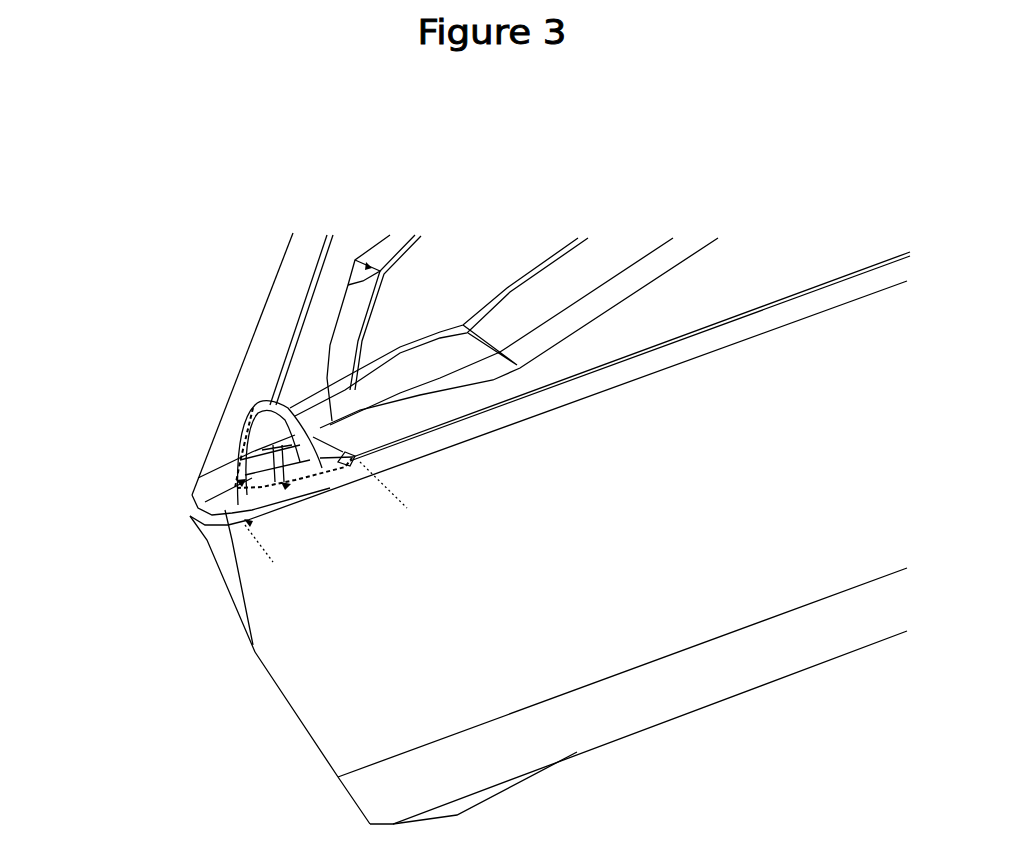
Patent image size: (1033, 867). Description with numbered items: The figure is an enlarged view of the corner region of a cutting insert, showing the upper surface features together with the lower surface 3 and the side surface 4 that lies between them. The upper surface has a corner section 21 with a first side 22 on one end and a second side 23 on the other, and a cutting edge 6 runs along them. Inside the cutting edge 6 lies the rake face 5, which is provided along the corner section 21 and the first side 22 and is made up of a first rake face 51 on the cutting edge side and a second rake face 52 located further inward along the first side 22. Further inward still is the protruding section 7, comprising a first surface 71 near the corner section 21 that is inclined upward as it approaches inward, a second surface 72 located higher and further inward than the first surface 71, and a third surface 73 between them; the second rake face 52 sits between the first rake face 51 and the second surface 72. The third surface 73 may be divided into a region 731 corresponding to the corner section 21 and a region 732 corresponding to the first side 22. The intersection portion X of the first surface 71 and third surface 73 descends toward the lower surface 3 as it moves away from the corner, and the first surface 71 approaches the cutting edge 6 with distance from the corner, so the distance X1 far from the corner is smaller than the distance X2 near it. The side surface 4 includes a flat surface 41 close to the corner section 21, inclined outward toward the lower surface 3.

The lower surface 3 is at (628, 733).
The side surface 4 is at (317, 680).
The flat surface 41 is at (232, 590).
The corner section 21 is at (205, 530).
The first side 22 is at (507, 430).
The second side 23 is at (200, 487).
The rake face 5 is at (428, 157).
The first rake face 51 is at (473, 430).
The second rake face 52 is at (425, 420).
The cutting edge 6 is at (284, 503).
The protruding section 7 is at (257, 185).
The first surface 71 is at (207, 493).
The second surface 72 is at (324, 363).
The third surface 73 is at (227, 273).
The region corresponding to the corner section 731 is at (228, 503).
The region corresponding to the first side 732 is at (272, 402).
The intersection portion X is at (317, 503).
The distance X1 is at (318, 505).
The distance X2 is at (191, 509).